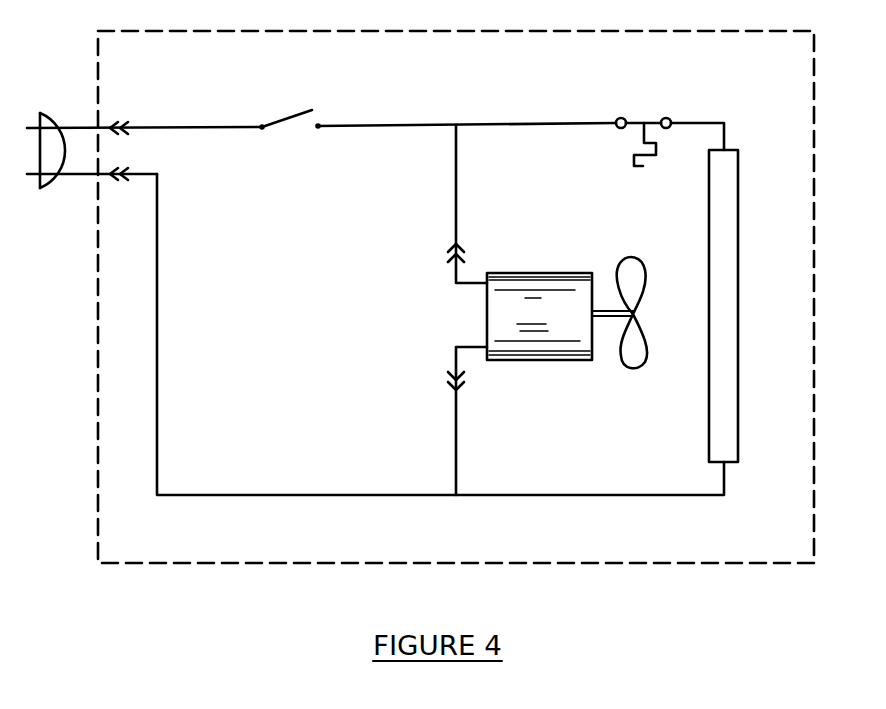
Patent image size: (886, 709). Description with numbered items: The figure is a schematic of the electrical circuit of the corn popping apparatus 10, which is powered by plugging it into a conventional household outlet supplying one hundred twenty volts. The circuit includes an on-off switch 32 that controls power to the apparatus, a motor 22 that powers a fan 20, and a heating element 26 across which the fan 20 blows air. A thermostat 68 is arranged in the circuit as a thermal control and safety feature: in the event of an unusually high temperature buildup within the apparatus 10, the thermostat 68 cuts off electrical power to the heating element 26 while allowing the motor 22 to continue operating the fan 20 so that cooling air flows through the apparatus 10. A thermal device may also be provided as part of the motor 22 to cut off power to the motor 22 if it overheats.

The corn popping apparatus 10 is at (814, 440).
The on-off switch 32 is at (293, 116).
The thermostat 68 is at (645, 117).
The heating element 26 is at (723, 408).
The motor 22 is at (539, 316).
The fan 20 is at (630, 348).